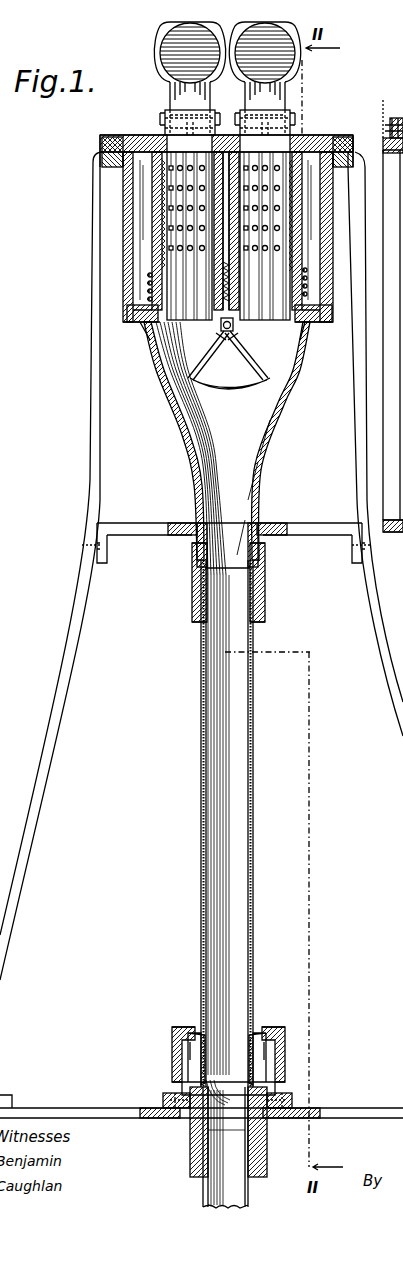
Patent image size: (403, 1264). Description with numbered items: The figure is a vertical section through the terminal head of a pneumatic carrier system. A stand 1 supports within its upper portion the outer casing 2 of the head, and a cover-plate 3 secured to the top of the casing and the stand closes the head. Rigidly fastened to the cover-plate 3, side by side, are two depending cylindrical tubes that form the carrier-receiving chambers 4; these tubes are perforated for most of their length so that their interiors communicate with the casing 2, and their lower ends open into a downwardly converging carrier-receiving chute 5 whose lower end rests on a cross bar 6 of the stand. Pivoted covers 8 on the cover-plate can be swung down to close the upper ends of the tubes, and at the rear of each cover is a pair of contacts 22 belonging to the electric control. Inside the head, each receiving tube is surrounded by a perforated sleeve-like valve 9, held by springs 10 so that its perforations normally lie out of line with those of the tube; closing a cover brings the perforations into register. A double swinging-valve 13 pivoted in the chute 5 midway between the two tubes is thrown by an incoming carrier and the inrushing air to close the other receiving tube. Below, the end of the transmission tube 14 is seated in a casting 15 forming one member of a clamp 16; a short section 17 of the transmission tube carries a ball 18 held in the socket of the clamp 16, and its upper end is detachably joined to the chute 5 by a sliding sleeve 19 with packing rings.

The stand 1 is at (68, 655).
The outer casing 2 is at (119, 266).
The cover-plate 3 is at (147, 135).
The carrier-receiving chambers 4 is at (158, 318).
The carrier-receiving chute 5 is at (257, 402).
The cross bar 6 is at (142, 518).
The pivoted covers 8 is at (227, 78).
The sleeve-like valve 9 is at (152, 190).
The springs 10 is at (148, 287).
The double swinging-valve 13 is at (146, 363).
The transmission tube 14 is at (203, 1193).
The casting 15 is at (268, 1137).
The clamp 16 is at (294, 1073).
The short section of transmission tube 17 is at (261, 886).
The ball 18 is at (279, 1050).
The sliding sleeve 19 is at (267, 614).
The pair of contacts 22 is at (402, 88).